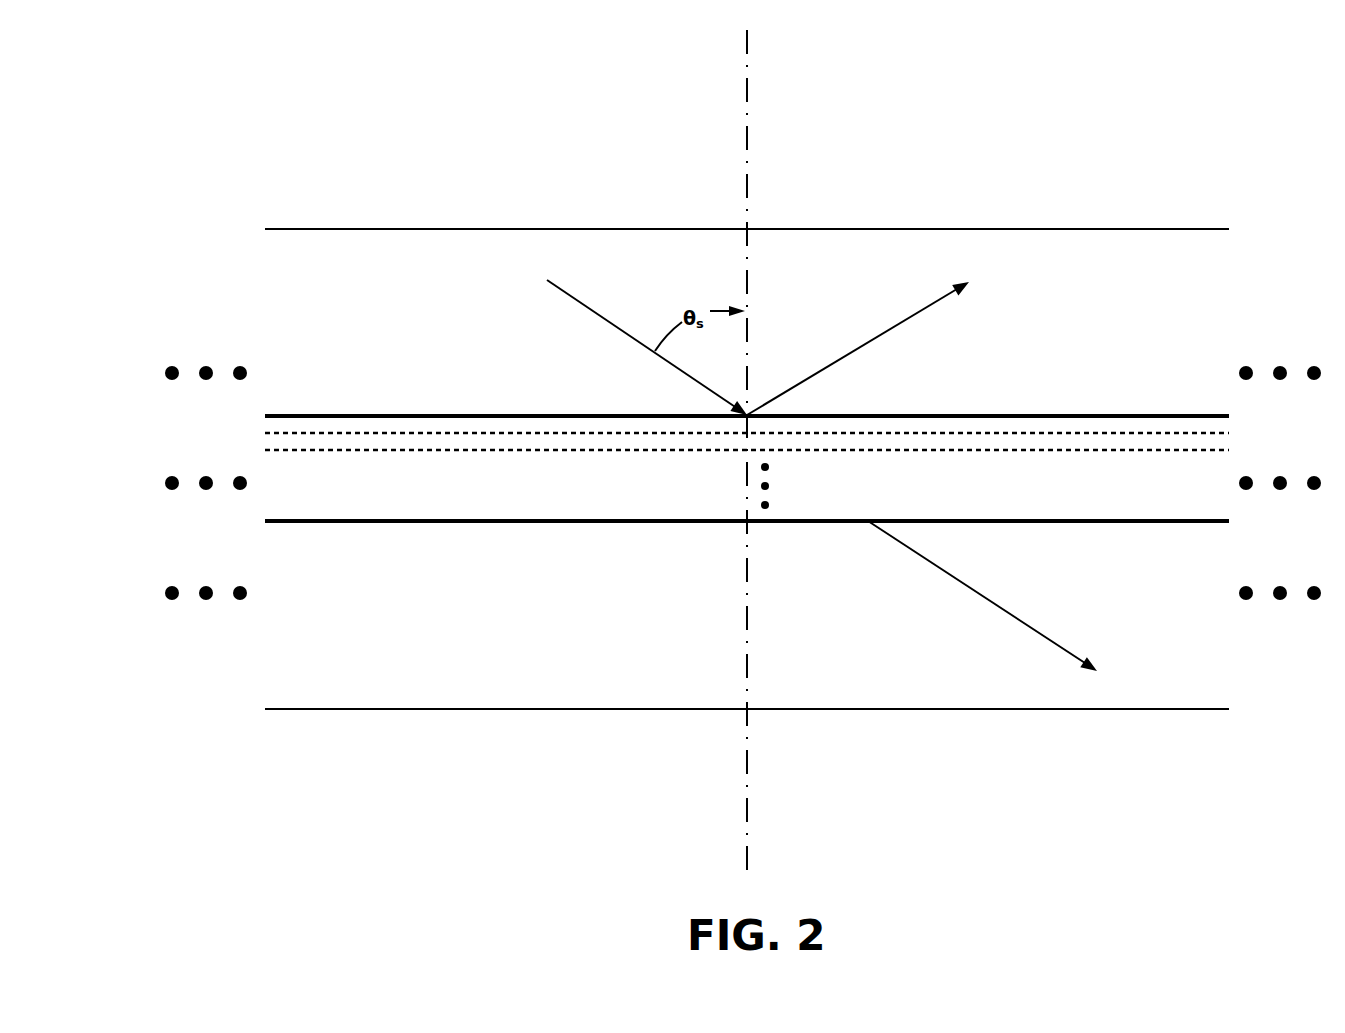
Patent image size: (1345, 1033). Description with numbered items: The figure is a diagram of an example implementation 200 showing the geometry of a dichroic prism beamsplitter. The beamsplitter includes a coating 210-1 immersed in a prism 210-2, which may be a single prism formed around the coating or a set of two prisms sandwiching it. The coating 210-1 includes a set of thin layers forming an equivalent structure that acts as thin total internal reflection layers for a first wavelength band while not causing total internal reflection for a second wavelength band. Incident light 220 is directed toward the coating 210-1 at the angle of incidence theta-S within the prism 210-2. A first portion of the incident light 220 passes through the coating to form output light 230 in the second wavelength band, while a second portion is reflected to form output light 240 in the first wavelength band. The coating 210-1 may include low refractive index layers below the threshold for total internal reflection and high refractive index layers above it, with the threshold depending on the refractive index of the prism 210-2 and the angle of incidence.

The example implementation 200 is at (240, 47).
The coating 210-1 is at (747, 485).
The prism 210-2 is at (747, 467).
The incident light 220 is at (593, 313).
The output light 230 is at (1021, 621).
The output light 240 is at (888, 331).